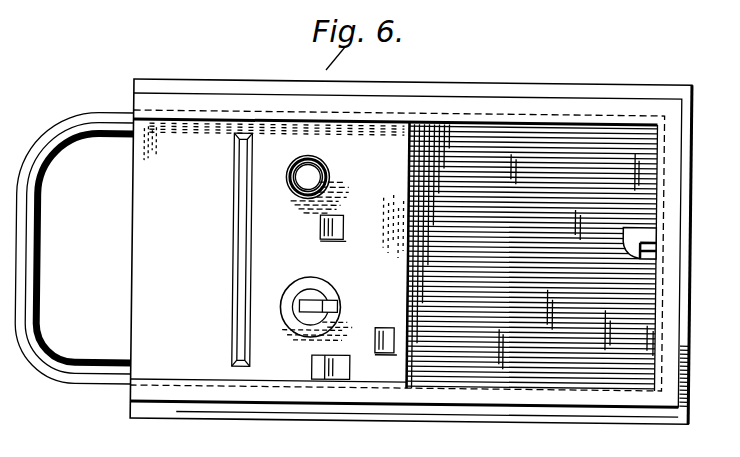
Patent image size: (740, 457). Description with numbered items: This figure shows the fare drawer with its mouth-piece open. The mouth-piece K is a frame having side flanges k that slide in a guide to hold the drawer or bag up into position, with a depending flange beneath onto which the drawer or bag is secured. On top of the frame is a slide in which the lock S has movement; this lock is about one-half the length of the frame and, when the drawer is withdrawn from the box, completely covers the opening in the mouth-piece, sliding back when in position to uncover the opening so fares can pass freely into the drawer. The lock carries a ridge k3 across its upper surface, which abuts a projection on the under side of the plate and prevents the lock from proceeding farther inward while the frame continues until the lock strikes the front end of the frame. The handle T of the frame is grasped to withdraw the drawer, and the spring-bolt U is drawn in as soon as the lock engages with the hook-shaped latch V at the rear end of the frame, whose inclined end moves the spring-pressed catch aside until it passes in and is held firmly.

The side flanges k is at (466, 78).
The handle T is at (74, 248).
The ridge k3 is at (236, 236).
The lock S is at (254, 262).
The push button M is at (330, 166).
The spring-bolt U is at (346, 224).
The mouth-piece K is at (472, 232).
The latch V is at (626, 233).